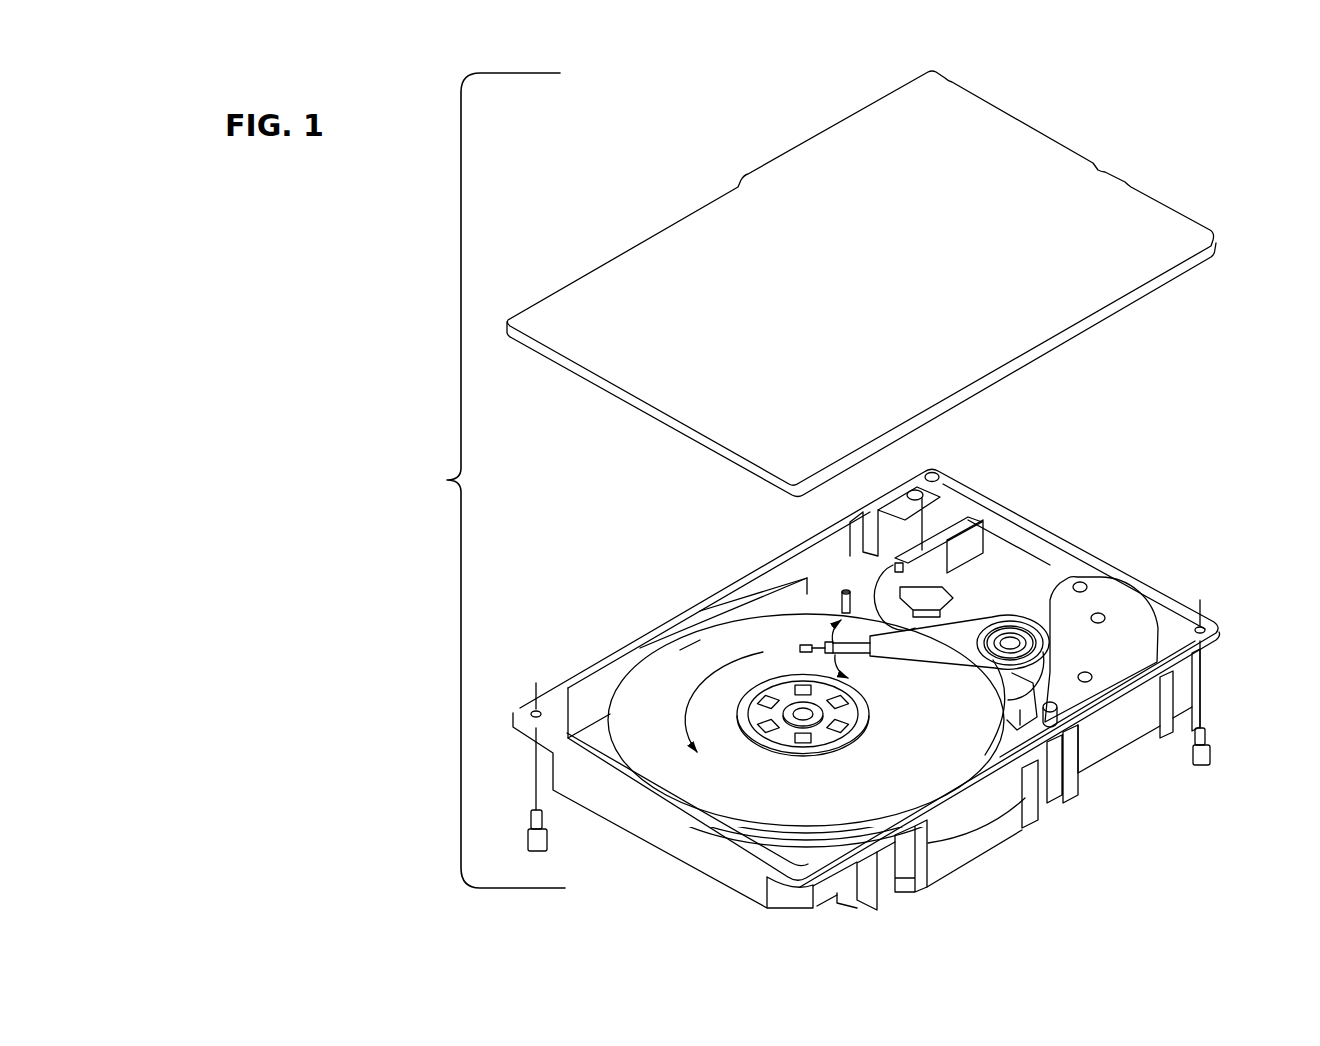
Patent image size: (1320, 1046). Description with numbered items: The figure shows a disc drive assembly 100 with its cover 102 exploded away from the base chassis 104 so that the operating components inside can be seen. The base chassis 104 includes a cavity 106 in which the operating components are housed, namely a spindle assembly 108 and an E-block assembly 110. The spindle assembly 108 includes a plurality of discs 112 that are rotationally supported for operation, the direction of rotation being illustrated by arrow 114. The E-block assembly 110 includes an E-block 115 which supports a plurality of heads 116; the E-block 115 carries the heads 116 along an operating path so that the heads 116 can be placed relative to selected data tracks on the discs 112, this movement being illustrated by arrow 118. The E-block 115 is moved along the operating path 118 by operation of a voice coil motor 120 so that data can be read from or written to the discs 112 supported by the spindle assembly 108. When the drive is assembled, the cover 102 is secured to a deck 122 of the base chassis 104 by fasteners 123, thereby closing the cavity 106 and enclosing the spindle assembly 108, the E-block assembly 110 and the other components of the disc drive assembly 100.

The disc drive assembly 100 is at (1108, 527).
The cover 102 is at (1035, 122).
The base chassis 104 is at (1178, 603).
The cavity 106 is at (787, 547).
The spindle assembly 108 is at (688, 645).
The E-block assembly 110 is at (1008, 636).
The discs 112 is at (770, 830).
The arrow 114 is at (695, 686).
The E-block 115 is at (970, 650).
The heads 116 is at (800, 647).
The arrow 118 is at (857, 698).
The voice coil motor 120 is at (1127, 627).
The deck 122 is at (957, 480).
The fasteners 123 is at (548, 843).